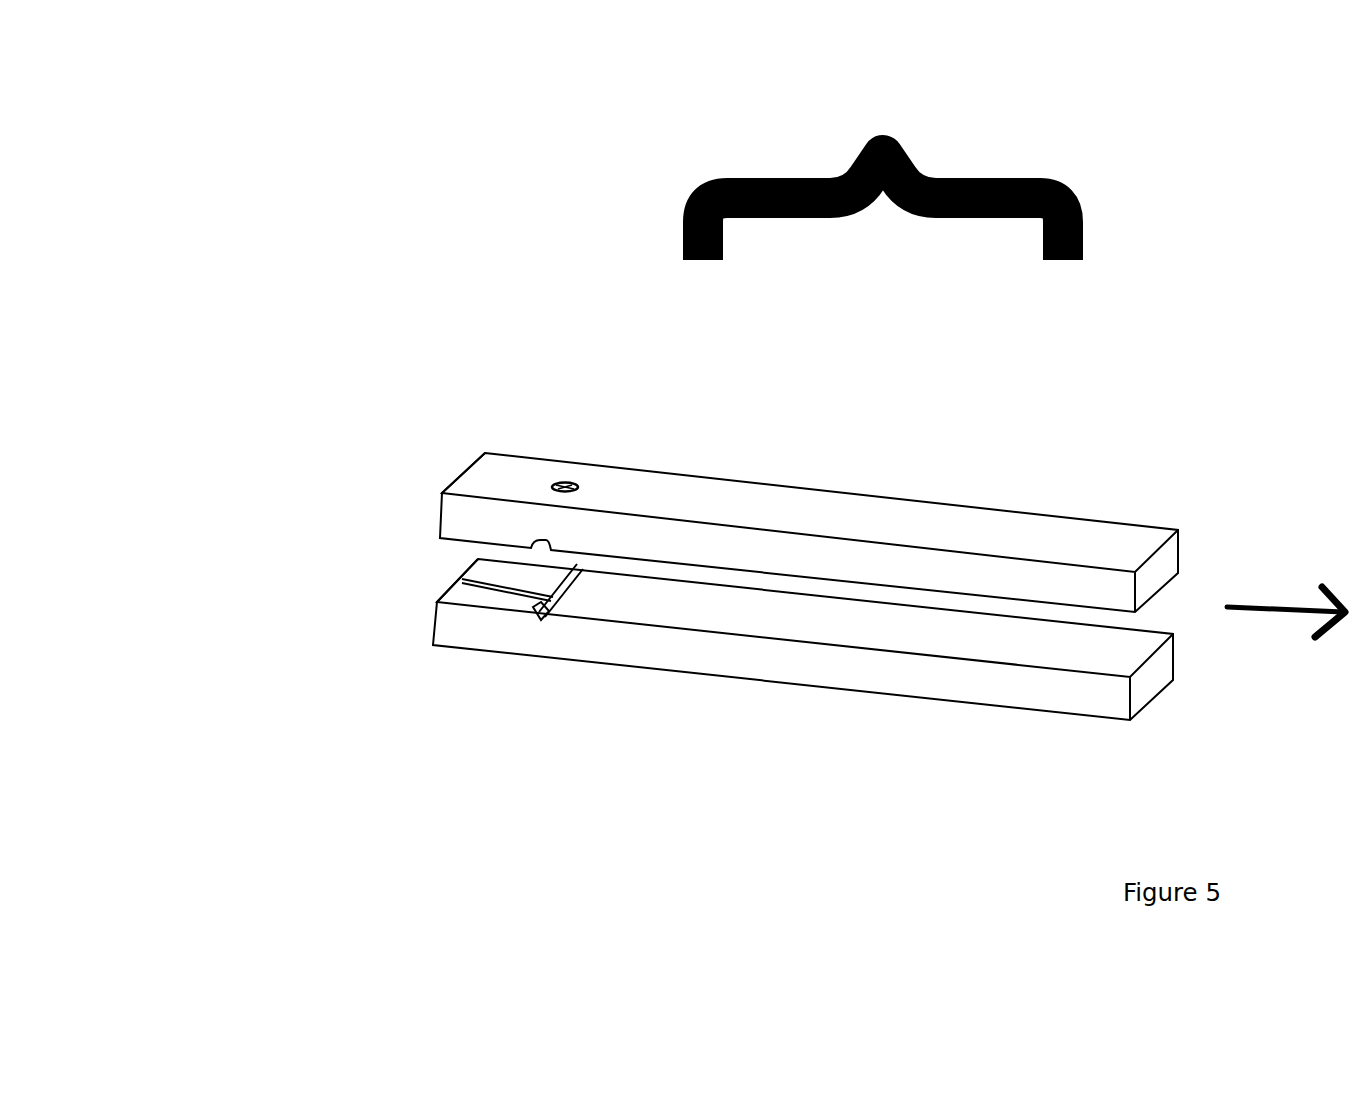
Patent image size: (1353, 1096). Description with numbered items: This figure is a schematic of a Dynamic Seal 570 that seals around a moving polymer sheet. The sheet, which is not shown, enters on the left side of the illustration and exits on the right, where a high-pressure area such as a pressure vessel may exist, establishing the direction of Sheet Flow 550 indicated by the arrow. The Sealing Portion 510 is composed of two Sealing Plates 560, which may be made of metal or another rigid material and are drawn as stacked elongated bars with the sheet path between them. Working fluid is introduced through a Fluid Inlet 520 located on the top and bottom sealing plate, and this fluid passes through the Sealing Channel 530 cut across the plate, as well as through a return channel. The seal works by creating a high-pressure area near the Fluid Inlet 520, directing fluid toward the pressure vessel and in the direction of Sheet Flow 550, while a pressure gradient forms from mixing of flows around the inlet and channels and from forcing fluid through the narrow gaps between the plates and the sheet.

The dynamic seal 570 is at (883, 147).
The sealing plates 560 is at (672, 605).
The sealing portion 510 is at (955, 602).
The fluid inlet 520 is at (588, 483).
The sealing channel 530 is at (440, 575).
The sheet flow 550 is at (1287, 590).